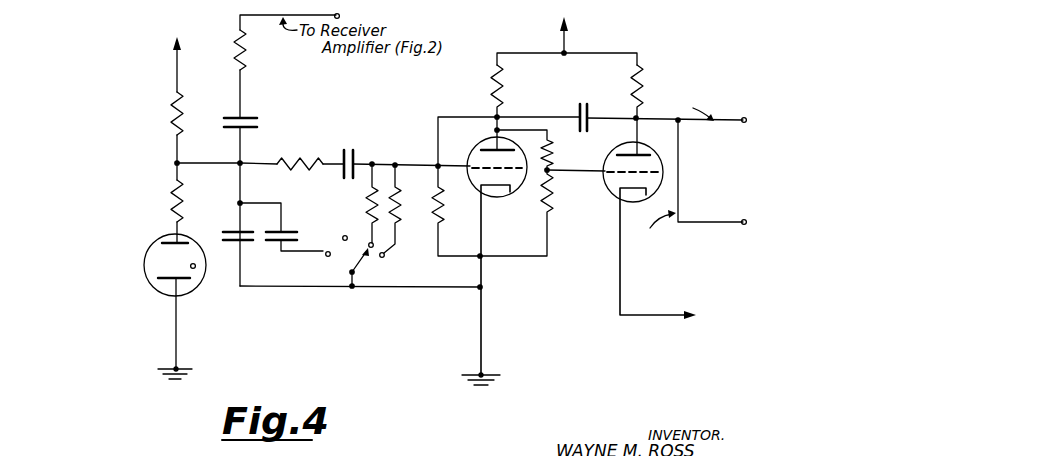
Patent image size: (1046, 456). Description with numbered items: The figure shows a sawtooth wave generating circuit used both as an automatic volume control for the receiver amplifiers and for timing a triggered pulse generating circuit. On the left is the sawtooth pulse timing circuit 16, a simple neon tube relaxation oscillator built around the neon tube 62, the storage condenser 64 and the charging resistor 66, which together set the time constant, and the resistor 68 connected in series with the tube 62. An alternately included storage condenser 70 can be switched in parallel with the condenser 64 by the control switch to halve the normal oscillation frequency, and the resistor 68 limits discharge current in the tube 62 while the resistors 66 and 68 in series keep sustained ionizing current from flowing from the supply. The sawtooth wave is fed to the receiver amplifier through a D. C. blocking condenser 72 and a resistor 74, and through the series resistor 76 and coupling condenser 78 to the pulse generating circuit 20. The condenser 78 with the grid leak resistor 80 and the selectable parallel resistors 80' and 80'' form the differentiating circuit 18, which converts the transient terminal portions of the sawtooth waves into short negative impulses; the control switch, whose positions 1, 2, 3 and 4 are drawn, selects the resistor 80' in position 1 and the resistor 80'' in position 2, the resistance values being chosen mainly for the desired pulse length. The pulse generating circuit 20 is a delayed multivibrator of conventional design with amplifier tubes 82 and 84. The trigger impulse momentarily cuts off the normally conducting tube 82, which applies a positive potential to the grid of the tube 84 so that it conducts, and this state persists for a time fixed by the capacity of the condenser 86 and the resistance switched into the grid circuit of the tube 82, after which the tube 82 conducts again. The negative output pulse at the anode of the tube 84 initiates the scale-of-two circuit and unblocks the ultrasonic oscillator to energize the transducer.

The sawtooth pulse timing circuit 16 is at (242, 196).
The differentiating circuit 18 is at (423, 141).
The pulse generating circuit 20 is at (613, 201).
The neon tube 62 is at (148, 283).
The storage condenser 64 is at (232, 229).
The charging resistor 66 is at (172, 109).
The resistor 68 is at (176, 184).
The storage condenser 70 is at (287, 230).
The D. C. blocking condenser 72 is at (246, 118).
The resistor 74 is at (248, 58).
The series resistor 76 is at (306, 174).
The coupling condenser 78 is at (343, 179).
The grid leak resistor 80 is at (456, 211).
The parallel resistor 80' is at (409, 209).
The parallel resistor 80'' is at (354, 203).
The amplifier tube 82 is at (492, 199).
The amplifier tube 84 is at (612, 197).
The condenser 86 is at (580, 132).
The switch position 1 is at (388, 254).
The switch position 2 is at (375, 242).
The switch position 3 is at (340, 234).
The switch position 4 is at (321, 248).